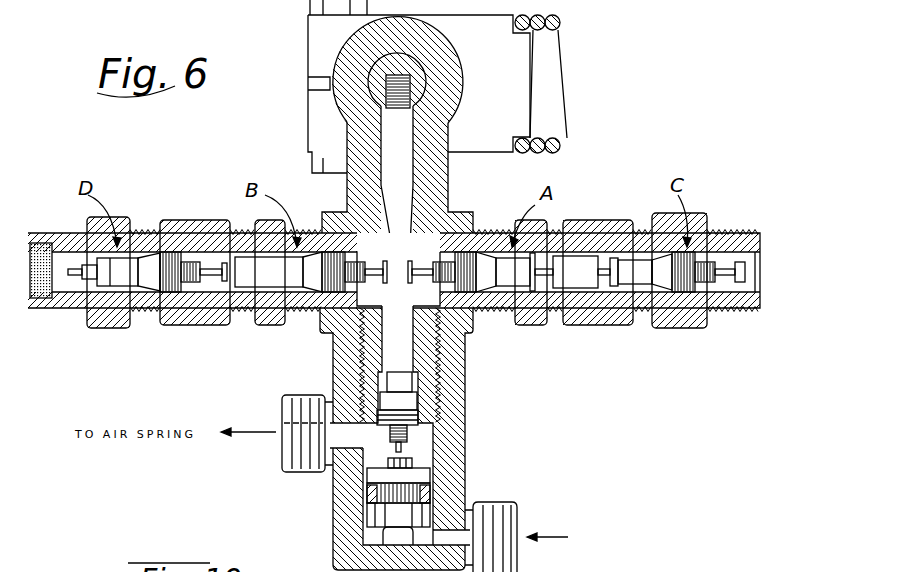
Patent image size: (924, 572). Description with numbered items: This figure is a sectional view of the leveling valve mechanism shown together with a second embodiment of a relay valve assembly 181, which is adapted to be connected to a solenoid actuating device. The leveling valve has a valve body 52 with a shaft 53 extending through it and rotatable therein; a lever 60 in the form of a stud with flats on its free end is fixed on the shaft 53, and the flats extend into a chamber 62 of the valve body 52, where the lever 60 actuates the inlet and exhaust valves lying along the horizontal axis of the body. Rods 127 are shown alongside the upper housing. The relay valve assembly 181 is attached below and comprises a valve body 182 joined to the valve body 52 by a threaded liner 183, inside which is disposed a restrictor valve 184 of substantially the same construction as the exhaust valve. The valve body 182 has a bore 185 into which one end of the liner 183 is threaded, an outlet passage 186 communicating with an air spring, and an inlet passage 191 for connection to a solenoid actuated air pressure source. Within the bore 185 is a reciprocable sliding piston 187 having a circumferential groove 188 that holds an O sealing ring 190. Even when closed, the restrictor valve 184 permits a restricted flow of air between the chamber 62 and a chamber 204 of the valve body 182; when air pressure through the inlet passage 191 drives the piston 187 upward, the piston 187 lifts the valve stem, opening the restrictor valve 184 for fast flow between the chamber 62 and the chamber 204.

The valve body 52 is at (347, 135).
The shaft 53 is at (418, 83).
The lever 60 is at (398, 136).
The chamber 62 is at (417, 244).
The rods 127 is at (573, 50).
The relay valve assembly 181 is at (483, 413).
The valve body 182 is at (455, 385).
The threaded liner 183 is at (372, 342).
The restrictor valve 184 is at (420, 352).
The bore 185 is at (428, 445).
The outlet passage 186 is at (278, 439).
The sliding piston 187 is at (395, 530).
The circumferential groove 188 is at (400, 515).
The O sealing ring 190 is at (385, 500).
The inlet passage 191 is at (518, 543).
The chamber 204 is at (418, 457).